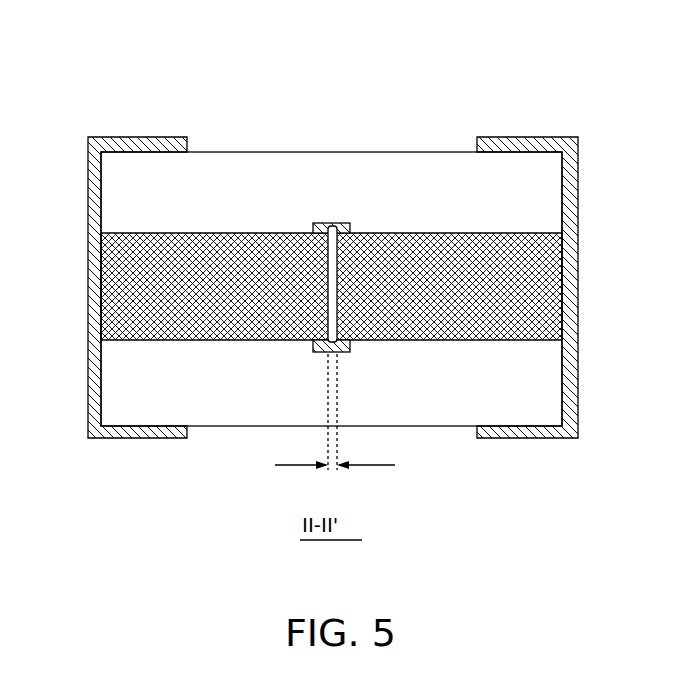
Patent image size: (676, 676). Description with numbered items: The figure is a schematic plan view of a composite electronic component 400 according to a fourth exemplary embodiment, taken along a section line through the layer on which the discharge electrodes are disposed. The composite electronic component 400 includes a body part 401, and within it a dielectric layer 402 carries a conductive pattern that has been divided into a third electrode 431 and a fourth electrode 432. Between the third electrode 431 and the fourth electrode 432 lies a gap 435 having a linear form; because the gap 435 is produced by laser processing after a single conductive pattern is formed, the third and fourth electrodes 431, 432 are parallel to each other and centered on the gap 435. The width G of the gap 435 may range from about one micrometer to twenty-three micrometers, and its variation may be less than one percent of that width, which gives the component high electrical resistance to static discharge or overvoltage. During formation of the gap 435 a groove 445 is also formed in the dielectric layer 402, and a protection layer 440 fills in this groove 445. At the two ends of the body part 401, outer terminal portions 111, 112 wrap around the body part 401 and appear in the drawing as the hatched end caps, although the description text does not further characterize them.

The composite electronic component 400 is at (164, 43).
The body part 401 is at (214, 133).
The dielectric layer 402 is at (445, 170).
The first external electrode 111 is at (116, 140).
The second external electrode 112 is at (552, 140).
The third electrode 431 is at (95, 282).
The fourth electrode 432 is at (562, 283).
The gap 435 is at (316, 222).
The protection layer 440 is at (346, 229).
The groove 445 is at (336, 222).